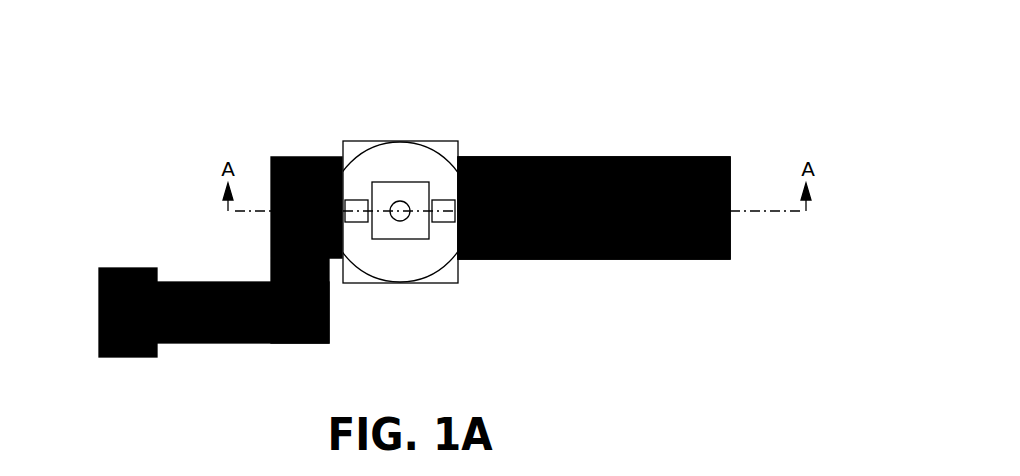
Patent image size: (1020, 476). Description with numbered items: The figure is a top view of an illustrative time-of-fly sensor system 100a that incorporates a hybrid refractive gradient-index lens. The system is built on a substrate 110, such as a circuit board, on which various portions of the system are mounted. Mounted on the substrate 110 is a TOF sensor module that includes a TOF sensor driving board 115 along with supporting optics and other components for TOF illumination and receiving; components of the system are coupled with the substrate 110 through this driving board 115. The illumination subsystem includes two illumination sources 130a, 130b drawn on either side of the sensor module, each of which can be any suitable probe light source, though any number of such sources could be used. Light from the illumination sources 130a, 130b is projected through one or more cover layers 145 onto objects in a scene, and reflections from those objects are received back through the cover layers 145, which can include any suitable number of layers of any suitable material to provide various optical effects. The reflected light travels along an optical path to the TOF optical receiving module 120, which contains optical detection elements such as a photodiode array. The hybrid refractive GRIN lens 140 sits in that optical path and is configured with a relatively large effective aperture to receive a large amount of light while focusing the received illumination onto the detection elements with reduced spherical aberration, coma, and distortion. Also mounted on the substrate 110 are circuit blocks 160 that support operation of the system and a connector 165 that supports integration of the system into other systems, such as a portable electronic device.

The TOF sensor system 100a is at (718, 44).
The substrate 110 is at (538, 259).
The TOF sensor driving board 115 is at (452, 140).
The TOF optical receiving module 120 is at (417, 228).
The illumination source 130a is at (290, 157).
The illumination source 130b is at (528, 157).
The hybrid refractive GRIN lens 140 is at (397, 208).
The cover layer 145 is at (372, 157).
The circuit blocks 160 is at (668, 259).
The connector 165 is at (118, 268).